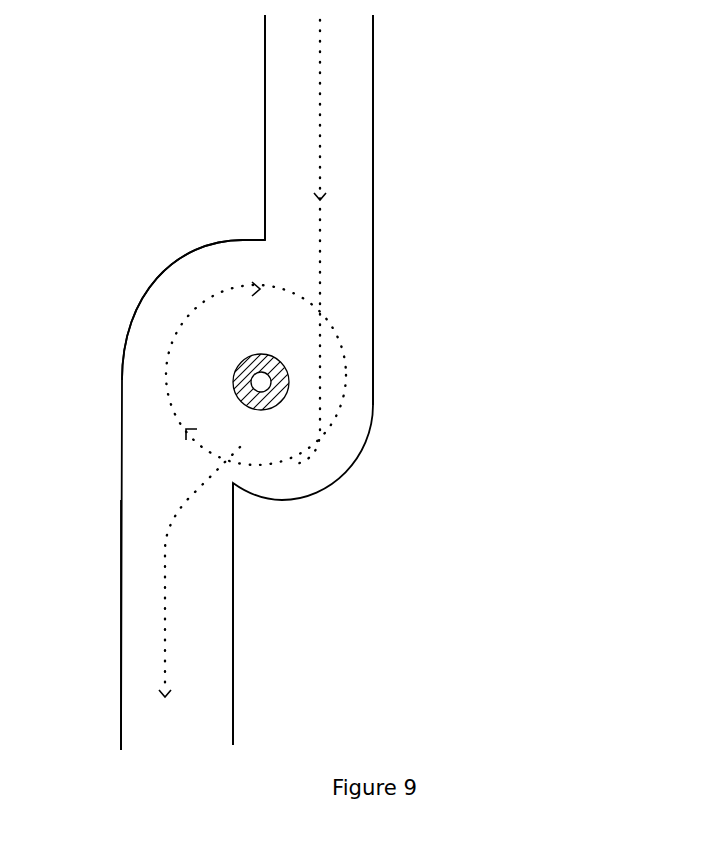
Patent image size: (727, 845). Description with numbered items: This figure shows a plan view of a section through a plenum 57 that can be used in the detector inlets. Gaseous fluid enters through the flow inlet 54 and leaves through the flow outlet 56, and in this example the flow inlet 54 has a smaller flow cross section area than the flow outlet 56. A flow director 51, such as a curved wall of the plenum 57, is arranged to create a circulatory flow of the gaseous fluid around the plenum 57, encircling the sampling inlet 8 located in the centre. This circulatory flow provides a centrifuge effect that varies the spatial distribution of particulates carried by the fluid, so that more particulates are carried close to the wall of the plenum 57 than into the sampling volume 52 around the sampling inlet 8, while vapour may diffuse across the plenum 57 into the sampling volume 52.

The flow director 51 is at (120, 278).
The sampling volume 52 is at (265, 358).
The sampling inlet 8 is at (267, 381).
The flow inlet 54 is at (362, 130).
The flow outlet 56 is at (222, 588).
The plenum 57 is at (186, 282).